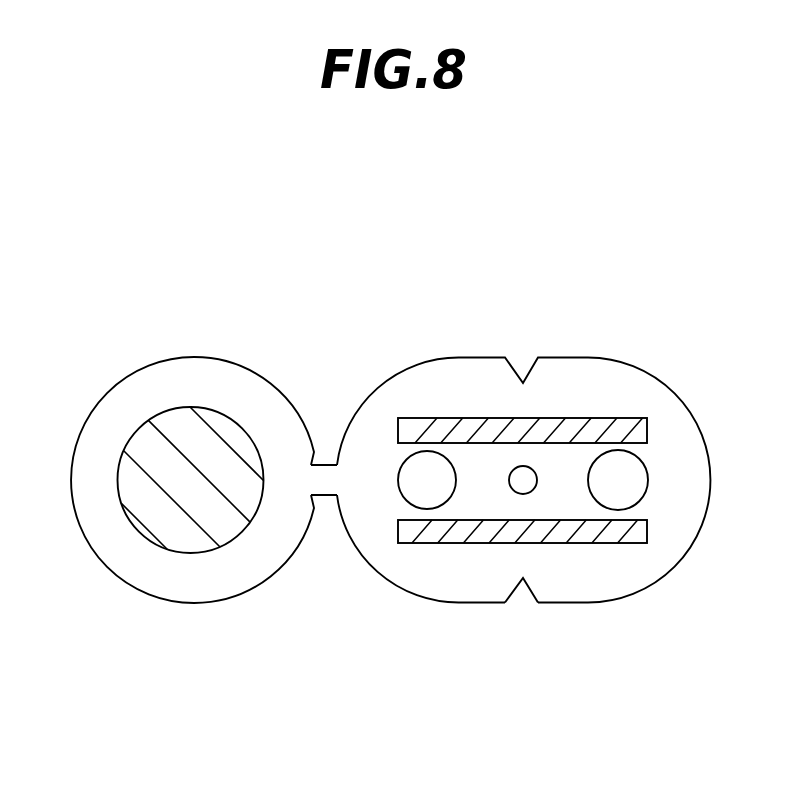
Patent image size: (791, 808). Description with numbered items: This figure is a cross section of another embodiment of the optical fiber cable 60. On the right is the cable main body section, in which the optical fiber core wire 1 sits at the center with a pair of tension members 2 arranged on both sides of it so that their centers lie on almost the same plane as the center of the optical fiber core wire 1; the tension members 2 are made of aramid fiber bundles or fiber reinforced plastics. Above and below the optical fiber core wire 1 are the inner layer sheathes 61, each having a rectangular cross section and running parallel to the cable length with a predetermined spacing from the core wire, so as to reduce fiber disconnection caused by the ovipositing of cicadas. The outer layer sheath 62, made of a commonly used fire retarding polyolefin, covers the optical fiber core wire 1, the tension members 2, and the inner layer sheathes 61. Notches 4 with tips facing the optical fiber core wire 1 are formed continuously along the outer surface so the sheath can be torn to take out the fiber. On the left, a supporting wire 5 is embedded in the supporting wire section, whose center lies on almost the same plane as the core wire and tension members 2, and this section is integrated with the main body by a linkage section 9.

The optical fiber cable 60 is at (692, 205).
The outer layer sheath 62 is at (400, 387).
The inner layer sheath 61 is at (513, 427).
The linkage section 9 is at (328, 480).
The notch 4 is at (512, 592).
The supporting wire 5 is at (177, 462).
The optical fiber core wire 1 is at (533, 477).
The tension member 2 is at (420, 500).